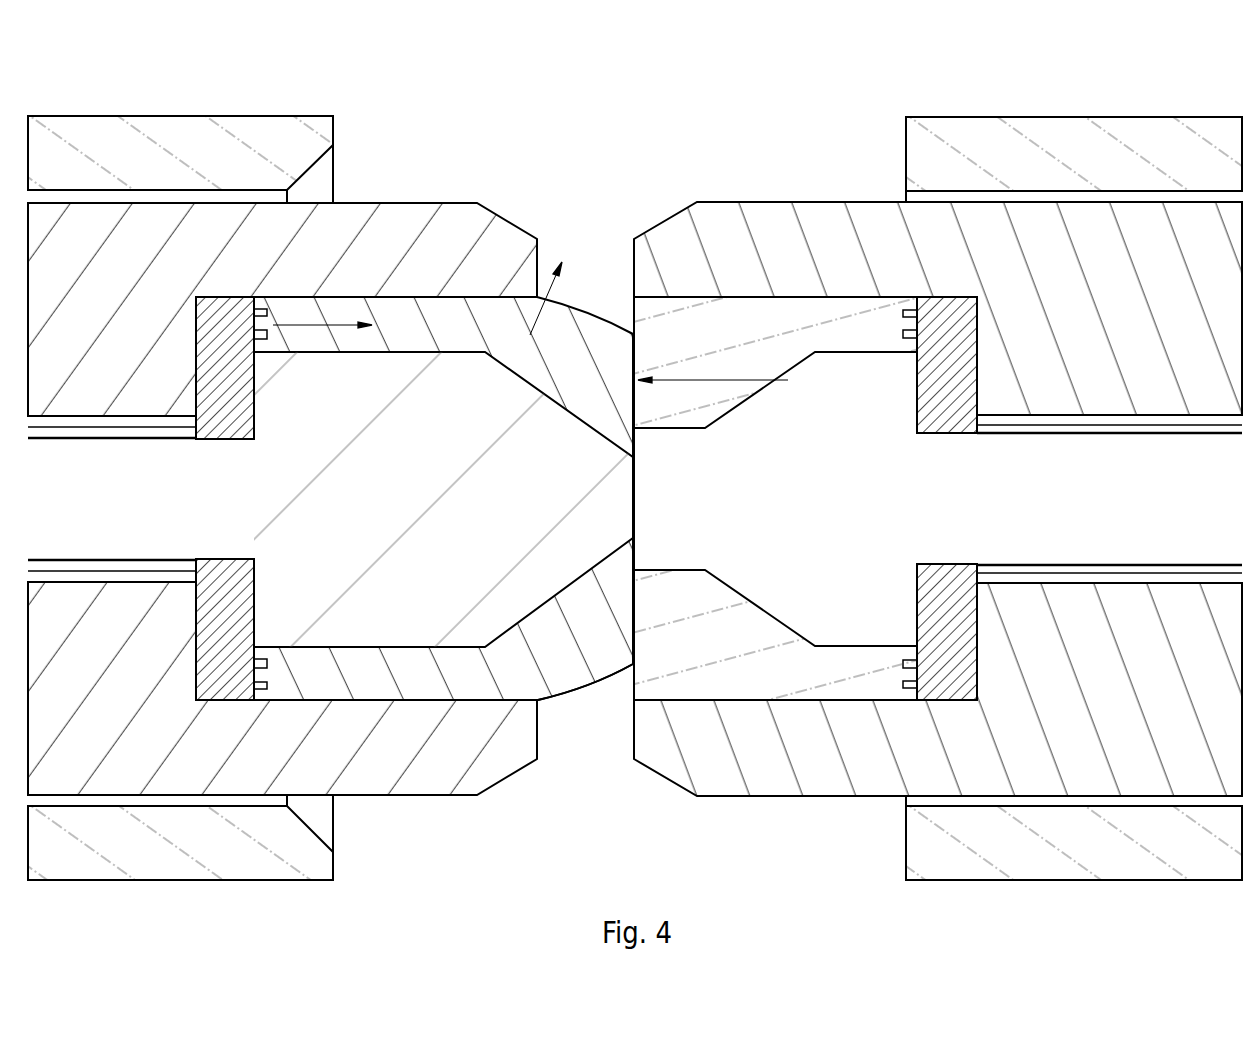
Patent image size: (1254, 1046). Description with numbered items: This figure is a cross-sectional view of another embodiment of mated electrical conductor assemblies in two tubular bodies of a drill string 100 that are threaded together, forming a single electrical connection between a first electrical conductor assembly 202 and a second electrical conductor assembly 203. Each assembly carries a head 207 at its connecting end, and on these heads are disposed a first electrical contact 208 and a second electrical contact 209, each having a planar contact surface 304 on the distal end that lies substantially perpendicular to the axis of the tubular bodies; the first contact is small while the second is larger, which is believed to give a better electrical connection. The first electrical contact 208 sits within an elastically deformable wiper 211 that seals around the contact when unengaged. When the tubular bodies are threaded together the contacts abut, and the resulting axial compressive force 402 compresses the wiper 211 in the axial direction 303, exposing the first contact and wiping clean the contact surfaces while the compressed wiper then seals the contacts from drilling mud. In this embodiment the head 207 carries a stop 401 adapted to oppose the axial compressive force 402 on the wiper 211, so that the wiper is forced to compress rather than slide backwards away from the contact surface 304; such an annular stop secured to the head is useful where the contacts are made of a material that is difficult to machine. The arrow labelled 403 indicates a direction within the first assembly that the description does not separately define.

The drill string 100 is at (200, 79).
The first electrical conductor assembly 202 is at (380, 148).
The second electrical conductor assembly 203 is at (902, 77).
The head 207 is at (411, 607).
The first electrical contact 208 is at (610, 472).
The second electrical contact 209 is at (660, 475).
The wiper 211 is at (568, 676).
The axial direction 303 is at (538, 300).
The contact surface 304 is at (633, 499).
The stop 401 is at (179, 348).
The axial compressive force 402 is at (718, 380).
The flow path in first member 403 is at (322, 325).